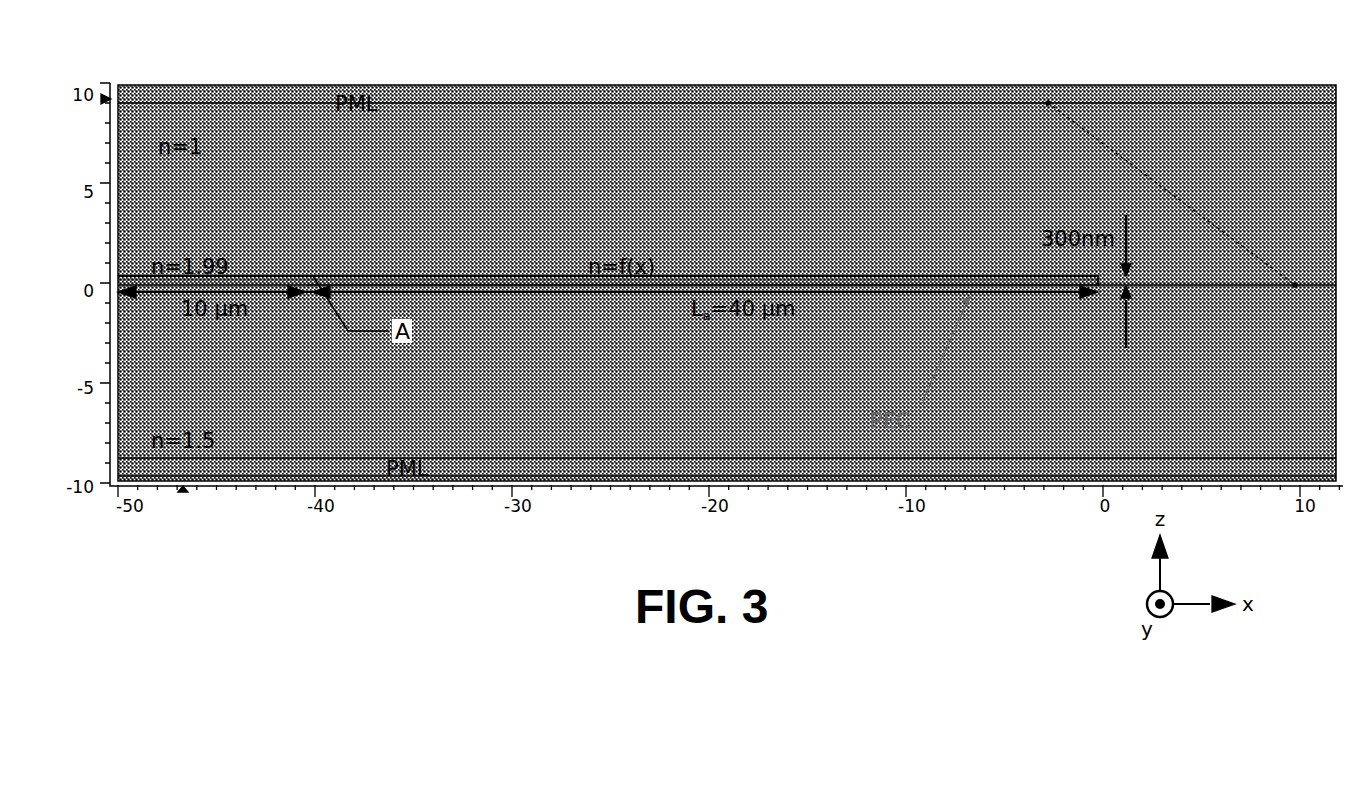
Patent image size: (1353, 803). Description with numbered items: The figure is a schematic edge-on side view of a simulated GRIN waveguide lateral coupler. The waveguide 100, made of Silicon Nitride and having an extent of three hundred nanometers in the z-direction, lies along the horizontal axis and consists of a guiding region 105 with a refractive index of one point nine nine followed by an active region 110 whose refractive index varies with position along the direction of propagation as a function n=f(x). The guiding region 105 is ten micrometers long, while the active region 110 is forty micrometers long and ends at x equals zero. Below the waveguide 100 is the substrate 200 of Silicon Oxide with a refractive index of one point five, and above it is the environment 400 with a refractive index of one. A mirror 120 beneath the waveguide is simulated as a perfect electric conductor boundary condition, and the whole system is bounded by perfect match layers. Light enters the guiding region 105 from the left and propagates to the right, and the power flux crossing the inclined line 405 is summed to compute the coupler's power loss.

The waveguide 100 is at (528, 195).
The guiding region 105 is at (252, 268).
The active region 110 is at (780, 268).
The mirror 120 is at (982, 278).
The substrate 200 is at (727, 375).
The environment 400 is at (727, 189).
The line 405 is at (1162, 180).